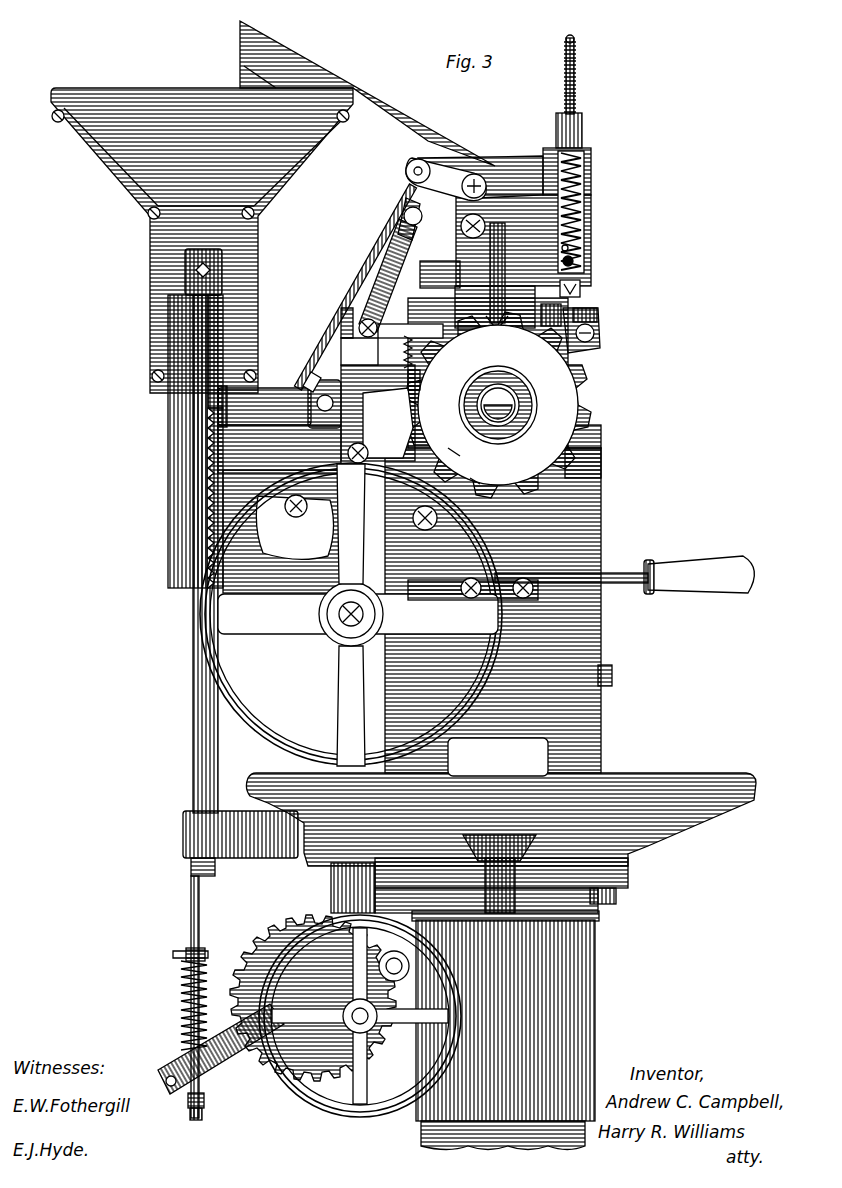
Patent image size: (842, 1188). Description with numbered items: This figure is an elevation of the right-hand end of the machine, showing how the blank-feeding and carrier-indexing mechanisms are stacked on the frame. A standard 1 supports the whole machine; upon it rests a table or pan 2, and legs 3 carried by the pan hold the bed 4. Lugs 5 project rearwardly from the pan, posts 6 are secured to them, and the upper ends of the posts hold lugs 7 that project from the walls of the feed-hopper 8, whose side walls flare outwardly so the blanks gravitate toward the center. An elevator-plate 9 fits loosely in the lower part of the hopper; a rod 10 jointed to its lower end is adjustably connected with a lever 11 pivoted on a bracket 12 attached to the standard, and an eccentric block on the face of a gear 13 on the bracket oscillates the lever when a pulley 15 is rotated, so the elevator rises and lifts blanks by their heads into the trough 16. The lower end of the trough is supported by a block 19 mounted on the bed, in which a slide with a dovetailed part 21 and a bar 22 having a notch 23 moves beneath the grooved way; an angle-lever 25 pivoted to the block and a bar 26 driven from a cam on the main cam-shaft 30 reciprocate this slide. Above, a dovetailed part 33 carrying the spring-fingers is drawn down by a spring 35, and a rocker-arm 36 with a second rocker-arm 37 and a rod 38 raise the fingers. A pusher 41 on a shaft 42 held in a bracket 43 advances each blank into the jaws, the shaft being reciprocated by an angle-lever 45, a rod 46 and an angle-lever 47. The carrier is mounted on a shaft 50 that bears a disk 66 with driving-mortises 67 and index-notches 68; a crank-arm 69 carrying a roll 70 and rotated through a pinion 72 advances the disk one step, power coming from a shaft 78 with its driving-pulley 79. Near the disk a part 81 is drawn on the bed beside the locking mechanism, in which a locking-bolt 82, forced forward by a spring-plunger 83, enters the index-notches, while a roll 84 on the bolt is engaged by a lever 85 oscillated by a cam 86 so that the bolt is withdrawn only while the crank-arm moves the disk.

The standard 1 is at (412, 1128).
The table or pan 2 is at (690, 825).
The legs 3 is at (530, 748).
The bed 4 is at (590, 626).
The lugs 5 is at (176, 826).
The posts 6 is at (187, 718).
The lugs 7 is at (142, 262).
The feed-hopper 8 is at (108, 172).
The elevator-plate 9 is at (165, 530).
The rod 10 is at (180, 945).
The lever 11 is at (198, 1073).
The bracket 12 is at (376, 1045).
The gear 13 is at (262, 897).
The pulley 15 is at (300, 1096).
The trough 16 is at (232, 48).
The block 19 is at (583, 210).
The dovetailed part 21 is at (556, 250).
The bar 22 is at (576, 284).
The notch 23 is at (567, 253).
The angle-lever 25 is at (395, 208).
The bar 26 is at (372, 258).
The main cam-shaft 30 is at (200, 493).
The dovetailed part 33 is at (574, 125).
The spring 35 is at (566, 64).
The rocker-arm 36 is at (520, 168).
The rocker-arm 37 is at (450, 160).
The rod 38 is at (358, 286).
The pusher 41 is at (590, 337).
The shaft 42 is at (592, 328).
The bracket 43 is at (592, 320).
The angle-lever 45 is at (590, 302).
The rod 46 is at (406, 318).
The angle-lever 47 is at (335, 325).
The shaft 50 is at (500, 385).
The disk 66 is at (585, 385).
The driving-mortises 67 is at (596, 430).
The index-notches 68 is at (596, 454).
The crank-arm 69 is at (448, 445).
The roll 70 is at (468, 470).
The pinion 72 is at (408, 430).
The shaft 78 is at (343, 580).
The driving-pulley 79 is at (283, 738).
The boss 81 is at (318, 350).
The locking-bolt 82 is at (408, 375).
The spring-plunger 83 is at (292, 382).
The roll 84 is at (376, 332).
The lever 85 is at (410, 398).
The cam 86 is at (294, 527).